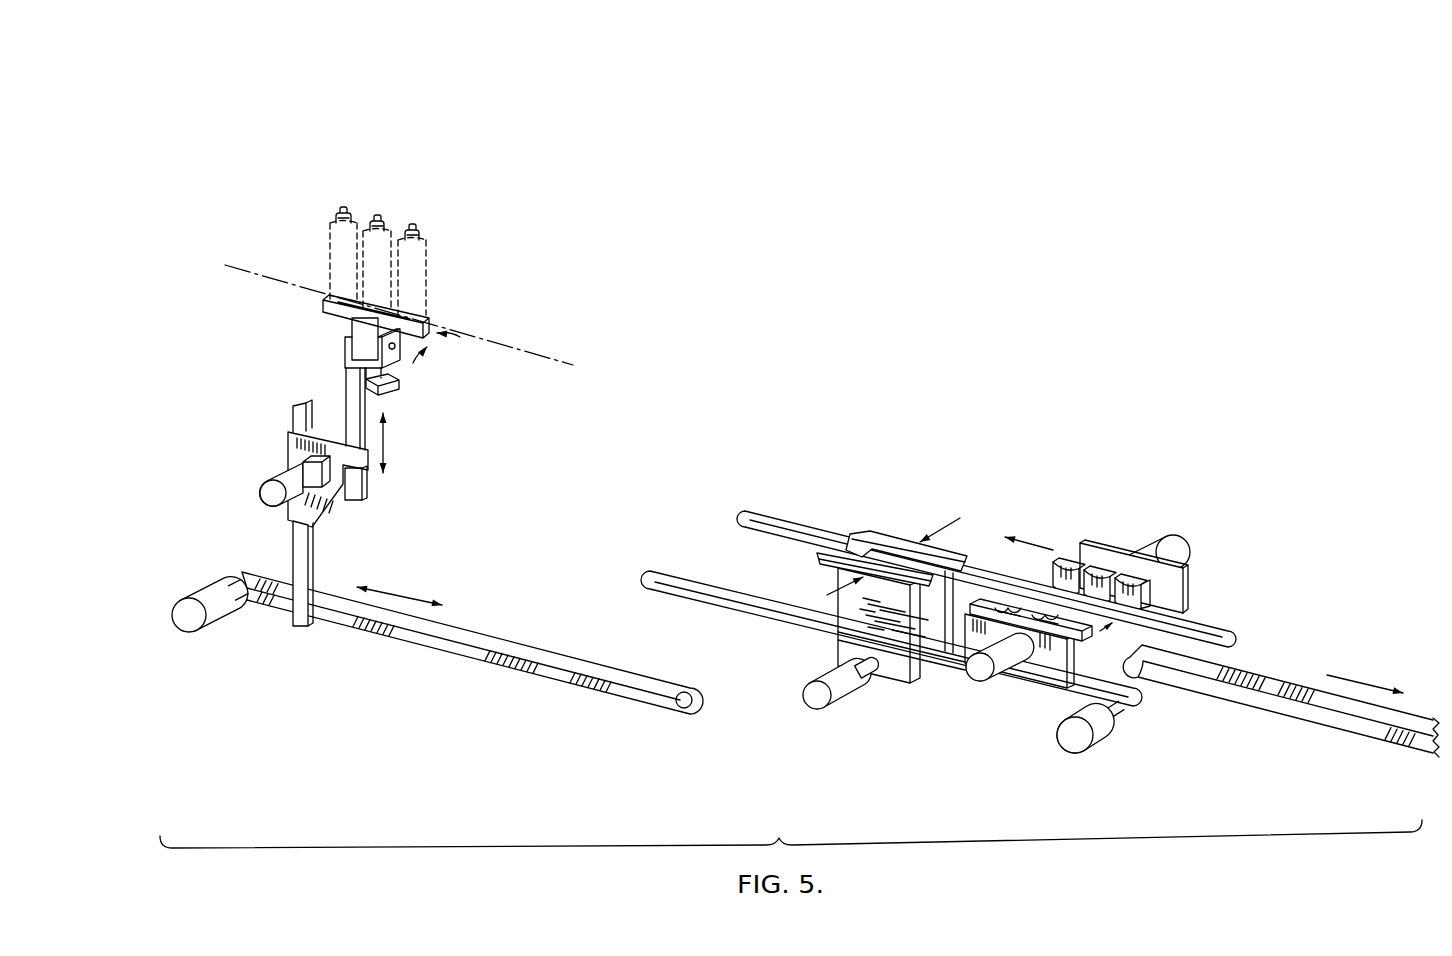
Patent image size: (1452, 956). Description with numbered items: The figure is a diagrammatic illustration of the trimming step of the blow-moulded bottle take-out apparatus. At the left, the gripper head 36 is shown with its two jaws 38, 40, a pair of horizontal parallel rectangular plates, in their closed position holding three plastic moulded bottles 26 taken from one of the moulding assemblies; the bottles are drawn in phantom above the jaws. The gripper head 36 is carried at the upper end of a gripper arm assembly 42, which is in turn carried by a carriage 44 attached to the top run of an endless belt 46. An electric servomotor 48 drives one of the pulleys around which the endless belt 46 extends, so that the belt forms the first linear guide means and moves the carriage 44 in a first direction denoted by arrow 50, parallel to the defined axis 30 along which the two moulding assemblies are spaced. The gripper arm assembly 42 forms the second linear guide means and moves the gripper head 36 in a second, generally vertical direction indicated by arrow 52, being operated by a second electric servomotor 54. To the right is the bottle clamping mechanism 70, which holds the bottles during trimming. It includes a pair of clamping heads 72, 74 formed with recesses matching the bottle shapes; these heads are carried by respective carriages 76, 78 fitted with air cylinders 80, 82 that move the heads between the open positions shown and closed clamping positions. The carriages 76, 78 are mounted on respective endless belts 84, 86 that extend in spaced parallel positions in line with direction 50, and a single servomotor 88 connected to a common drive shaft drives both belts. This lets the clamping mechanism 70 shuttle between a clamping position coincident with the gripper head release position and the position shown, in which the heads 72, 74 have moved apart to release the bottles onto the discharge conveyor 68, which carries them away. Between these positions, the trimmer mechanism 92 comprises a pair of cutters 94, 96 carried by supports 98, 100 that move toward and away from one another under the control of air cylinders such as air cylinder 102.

The plastic moulded bottles 26 is at (356, 214).
The defined axis 30 is at (555, 362).
The gripper head 36 is at (318, 348).
The jaw 38 is at (426, 336).
The jaw 40 is at (331, 308).
The gripper arm assembly 42 is at (337, 515).
The carriage 44 is at (318, 585).
The endless belt 46 is at (555, 690).
The electric servomotor 48 is at (218, 614).
The arrow 50 is at (398, 591).
The arrow 52 is at (393, 447).
The second electric servomotor 54 is at (280, 482).
The discharge conveyor 68 is at (1323, 735).
The bottle clamping mechanism 70 is at (1110, 605).
The clamping head 72 is at (1000, 601).
The clamping head 74 is at (1067, 553).
The carriage 76 is at (1045, 675).
The carriage 78 is at (1188, 595).
The air cylinder 80 is at (978, 677).
The air cylinder 82 is at (1184, 543).
The endless belt 84 is at (767, 623).
The endless belt 86 is at (795, 520).
The servomotor 88 is at (1088, 738).
The trimmer mechanism 92 is at (873, 574).
The cutter 94 is at (816, 562).
The cutter 96 is at (887, 534).
The support 98 is at (857, 612).
The support 100 is at (930, 628).
The air cylinder 102 is at (813, 707).